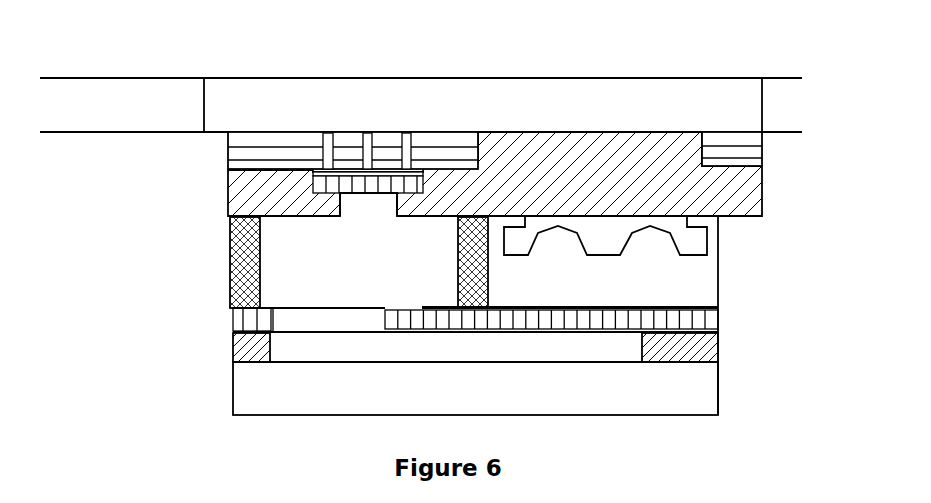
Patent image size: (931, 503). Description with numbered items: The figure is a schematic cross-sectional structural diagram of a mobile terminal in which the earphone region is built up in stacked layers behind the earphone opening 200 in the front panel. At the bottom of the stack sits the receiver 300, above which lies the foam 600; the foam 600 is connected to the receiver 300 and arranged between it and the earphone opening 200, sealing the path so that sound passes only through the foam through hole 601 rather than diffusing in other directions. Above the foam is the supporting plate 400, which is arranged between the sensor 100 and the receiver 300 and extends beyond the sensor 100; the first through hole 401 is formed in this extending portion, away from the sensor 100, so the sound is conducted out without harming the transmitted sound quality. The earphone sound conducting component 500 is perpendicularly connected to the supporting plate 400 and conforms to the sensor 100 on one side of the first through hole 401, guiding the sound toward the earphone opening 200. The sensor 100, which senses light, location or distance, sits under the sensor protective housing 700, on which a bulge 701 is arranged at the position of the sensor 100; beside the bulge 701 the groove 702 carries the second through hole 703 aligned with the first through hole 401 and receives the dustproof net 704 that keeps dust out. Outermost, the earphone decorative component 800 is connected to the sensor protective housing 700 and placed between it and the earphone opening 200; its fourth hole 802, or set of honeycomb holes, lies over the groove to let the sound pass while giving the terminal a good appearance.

The sensor 100 is at (718, 262).
The earphone opening 200 is at (488, 112).
The receiver 300 is at (718, 393).
The supporting plate 400 is at (718, 320).
The first through hole 401 is at (273, 318).
The earphone sound conducting component 500 is at (457, 272).
The foam 600 is at (718, 348).
The foam through hole 601 is at (268, 350).
The sensor protective housing 700 is at (762, 193).
The bulge 701 is at (702, 135).
The groove 702 is at (312, 185).
The second through hole 703 is at (367, 203).
The dustproof net 704 is at (364, 193).
The earphone decorative component 800 is at (228, 152).
The fourth hole 802 is at (330, 132).